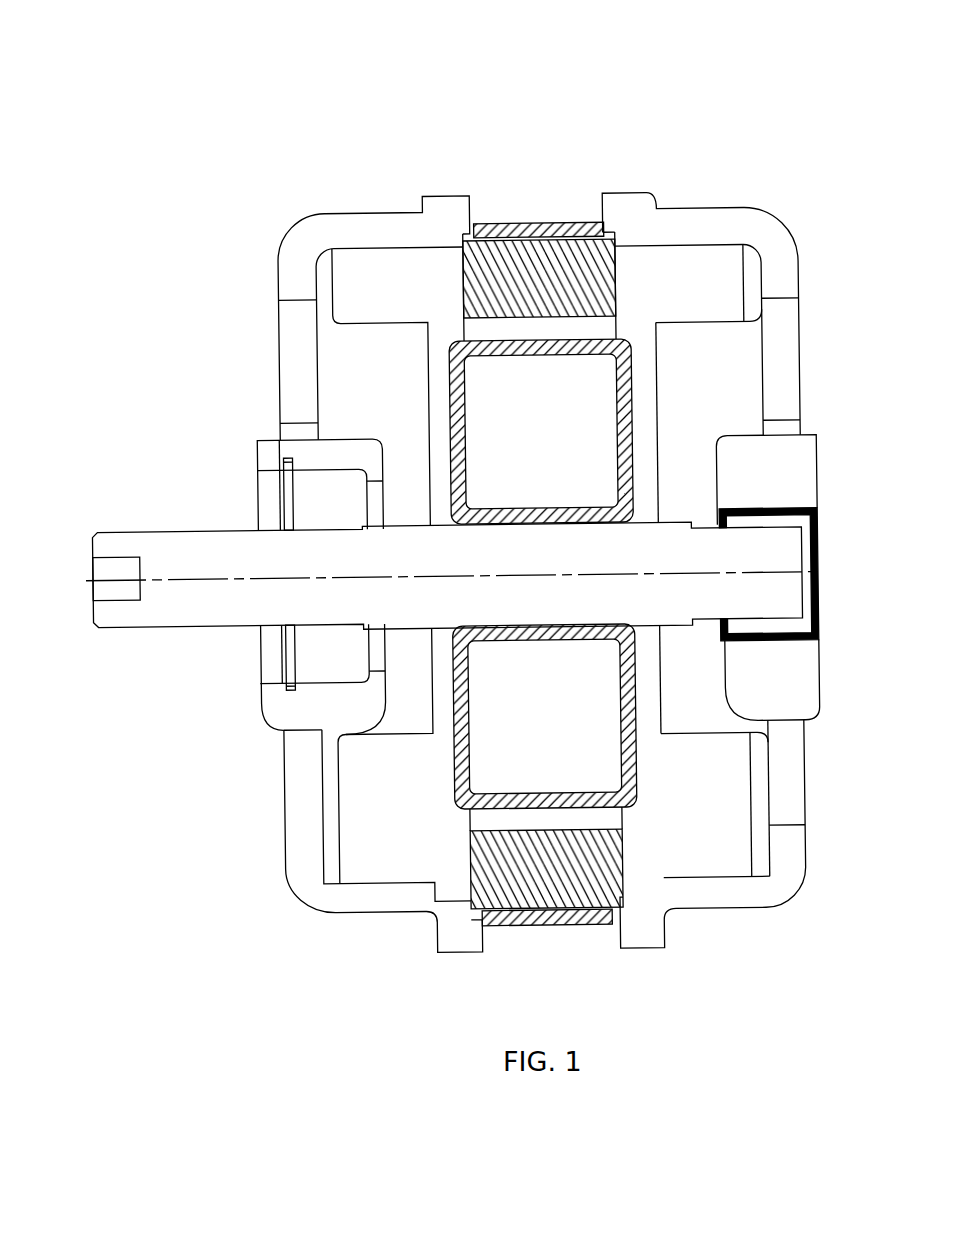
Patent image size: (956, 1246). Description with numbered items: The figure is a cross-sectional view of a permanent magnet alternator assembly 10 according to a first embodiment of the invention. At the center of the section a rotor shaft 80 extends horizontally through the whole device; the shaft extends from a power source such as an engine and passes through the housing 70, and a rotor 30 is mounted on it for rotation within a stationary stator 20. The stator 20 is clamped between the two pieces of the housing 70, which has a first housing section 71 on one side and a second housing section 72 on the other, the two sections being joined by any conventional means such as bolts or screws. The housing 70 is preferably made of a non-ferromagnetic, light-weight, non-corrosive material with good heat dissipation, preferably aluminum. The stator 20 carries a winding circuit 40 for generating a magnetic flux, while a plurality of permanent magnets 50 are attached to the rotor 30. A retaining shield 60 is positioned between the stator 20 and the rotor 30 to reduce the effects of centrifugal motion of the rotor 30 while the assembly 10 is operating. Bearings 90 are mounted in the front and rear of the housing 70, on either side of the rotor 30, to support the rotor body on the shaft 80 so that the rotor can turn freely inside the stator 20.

The permanent magnet alternator assembly 10 is at (454, 517).
The stator 20 is at (507, 223).
The rotor 30 is at (458, 780).
The winding circuit 40 is at (567, 237).
The permanent magnets 50 is at (482, 837).
The retaining shield 60 is at (455, 900).
The housing 70 is at (562, 531).
The first housing section 71 is at (330, 237).
The second housing section 72 is at (727, 230).
The rotor shaft 80 is at (178, 560).
The bearings 90 is at (278, 456).